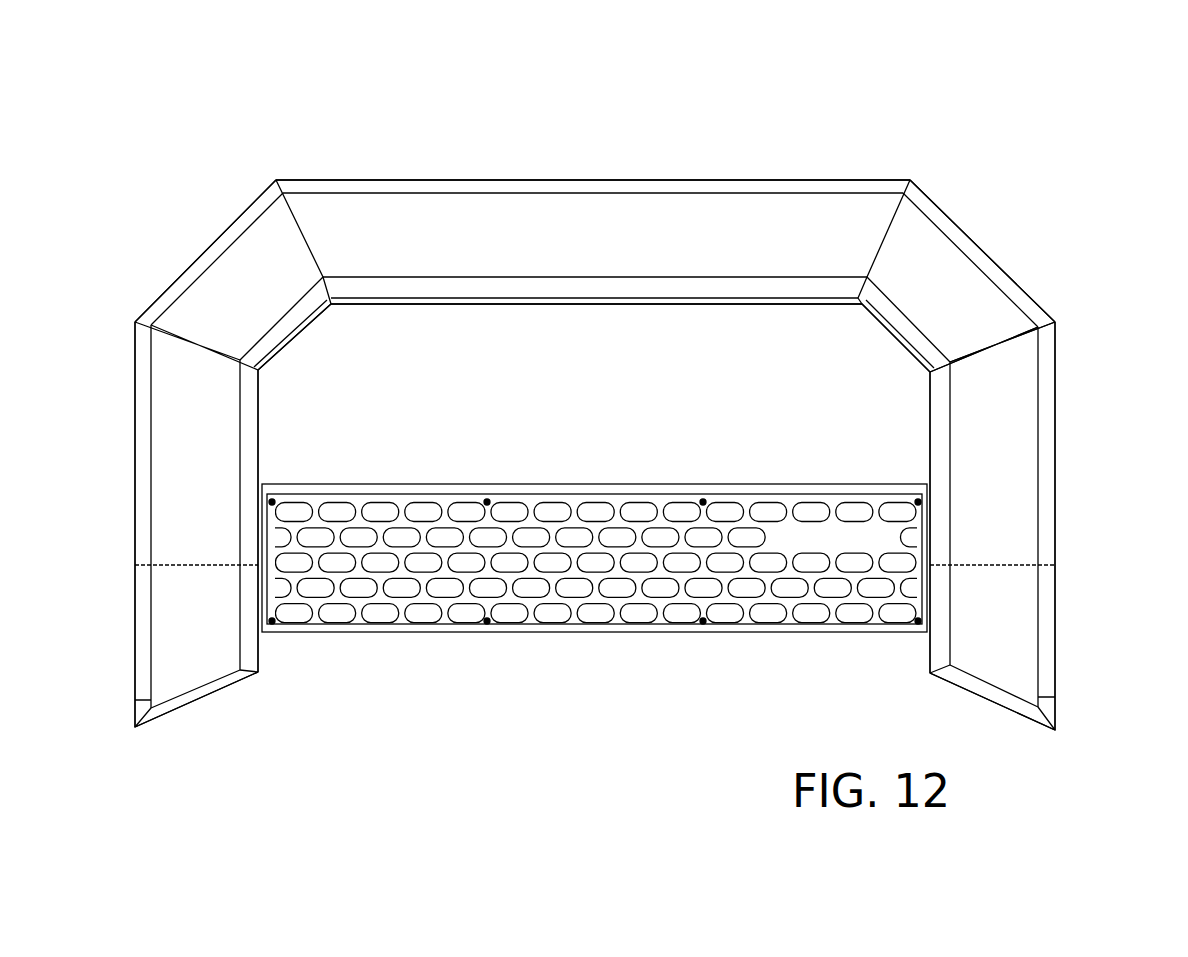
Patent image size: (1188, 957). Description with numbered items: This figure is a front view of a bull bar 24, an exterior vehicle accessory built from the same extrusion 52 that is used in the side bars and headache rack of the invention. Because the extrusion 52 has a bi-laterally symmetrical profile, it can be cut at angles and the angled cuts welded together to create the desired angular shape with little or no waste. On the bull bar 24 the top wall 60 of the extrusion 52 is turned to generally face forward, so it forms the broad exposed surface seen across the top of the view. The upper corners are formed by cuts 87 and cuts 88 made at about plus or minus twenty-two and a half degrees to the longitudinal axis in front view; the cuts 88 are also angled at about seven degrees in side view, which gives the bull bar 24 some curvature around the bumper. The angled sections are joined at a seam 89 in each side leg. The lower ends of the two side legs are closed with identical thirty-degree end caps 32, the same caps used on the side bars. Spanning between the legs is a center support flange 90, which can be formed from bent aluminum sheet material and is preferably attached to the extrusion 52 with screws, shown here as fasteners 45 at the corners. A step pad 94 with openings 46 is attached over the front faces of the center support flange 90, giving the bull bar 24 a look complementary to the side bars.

The bull bar 24 is at (1017, 183).
The top wall 60 is at (788, 212).
The cuts 87 is at (300, 231).
The extrusion 52 is at (583, 222).
The cuts 88 is at (997, 337).
The seam line of side wing 89 is at (1007, 568).
The end caps 32 is at (212, 688).
The center support flange 90 is at (508, 487).
The step pad 94 is at (573, 508).
The fasteners 45 is at (705, 500).
The openings 46 is at (803, 508).